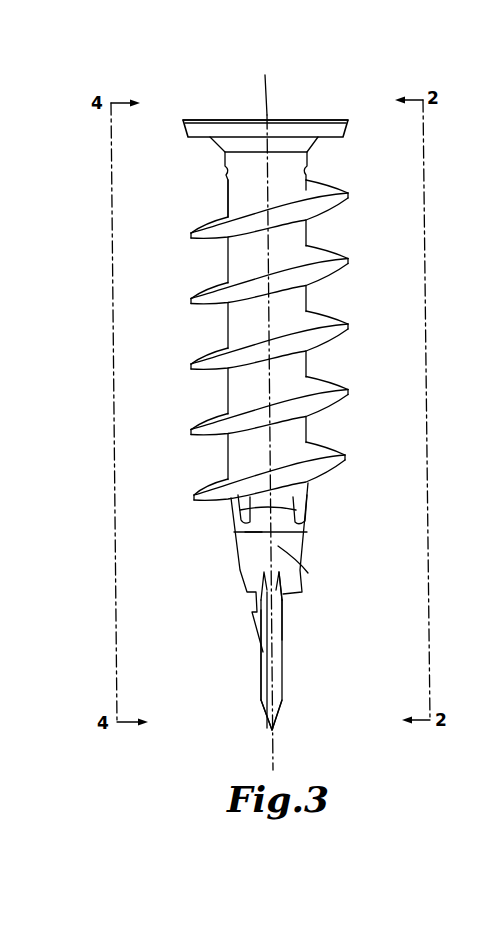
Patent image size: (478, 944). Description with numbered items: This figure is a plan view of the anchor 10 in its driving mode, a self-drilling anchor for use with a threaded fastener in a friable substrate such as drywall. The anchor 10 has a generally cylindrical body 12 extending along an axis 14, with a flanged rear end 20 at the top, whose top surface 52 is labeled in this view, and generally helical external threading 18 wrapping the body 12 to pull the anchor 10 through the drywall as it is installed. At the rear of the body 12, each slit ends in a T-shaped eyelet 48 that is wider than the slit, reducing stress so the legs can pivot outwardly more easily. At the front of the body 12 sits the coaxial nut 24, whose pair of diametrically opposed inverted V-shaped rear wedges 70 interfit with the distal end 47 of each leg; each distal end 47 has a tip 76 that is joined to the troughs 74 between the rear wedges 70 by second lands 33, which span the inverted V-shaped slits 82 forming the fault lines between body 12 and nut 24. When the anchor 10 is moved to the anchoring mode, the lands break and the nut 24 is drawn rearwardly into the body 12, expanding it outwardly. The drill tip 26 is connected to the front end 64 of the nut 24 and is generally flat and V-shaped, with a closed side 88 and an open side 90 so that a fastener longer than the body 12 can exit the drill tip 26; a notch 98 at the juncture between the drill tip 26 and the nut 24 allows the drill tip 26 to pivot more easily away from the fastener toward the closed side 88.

The anchor 10 is at (363, 178).
The body 12 is at (290, 303).
The axis 14 is at (260, 108).
The external threading 18 is at (222, 303).
The flanged rear end 20 is at (163, 116).
The nut 24 is at (305, 570).
The drill tip 26 is at (285, 738).
The second lands 33 is at (260, 528).
The distal end 47 is at (282, 497).
The eyelet 48 is at (266, 195).
The head top surface 52 is at (307, 123).
The front end of nut 64 is at (300, 592).
The rear wedges 70 is at (240, 510).
The troughs 74 is at (280, 546).
The tip 76 is at (235, 488).
The inverted V-shaped slits 82 is at (238, 532).
The closed side 88 is at (250, 659).
The open side 90 is at (291, 636).
The notch 98 is at (285, 608).